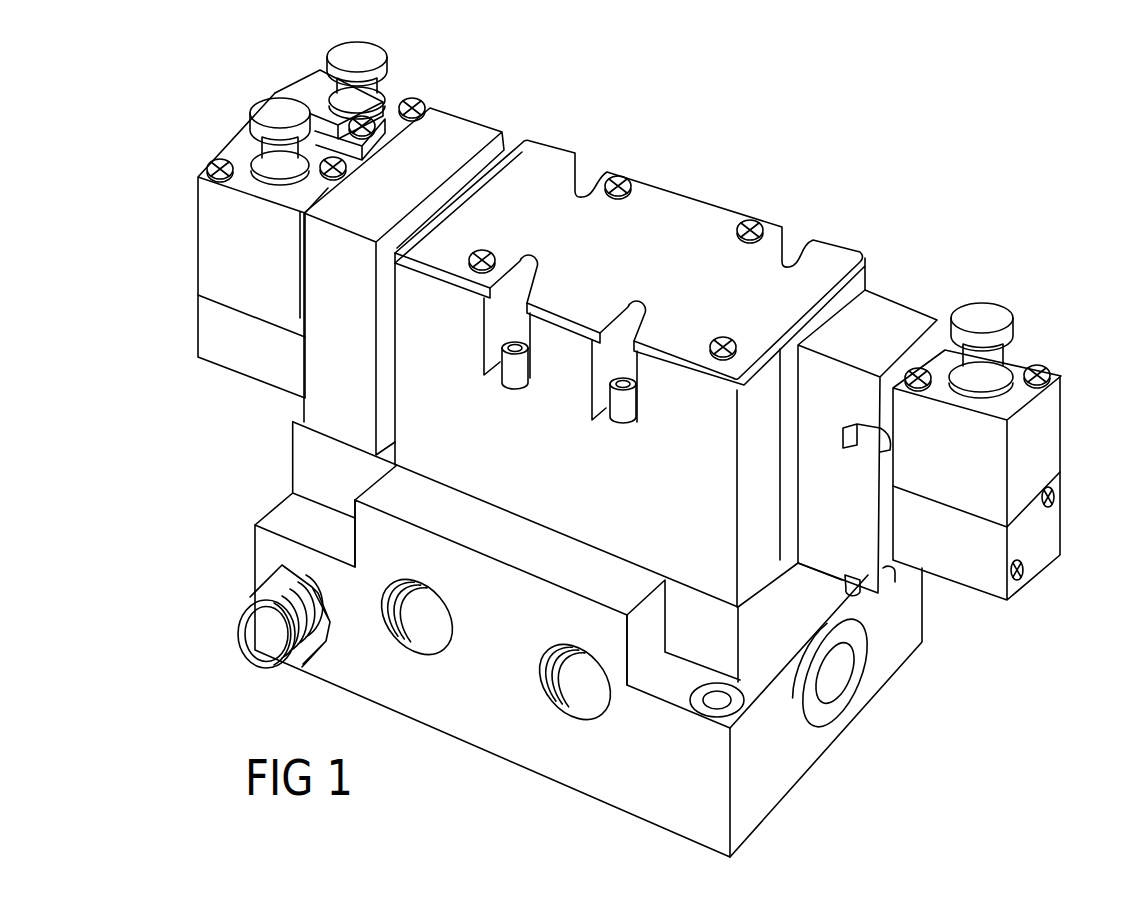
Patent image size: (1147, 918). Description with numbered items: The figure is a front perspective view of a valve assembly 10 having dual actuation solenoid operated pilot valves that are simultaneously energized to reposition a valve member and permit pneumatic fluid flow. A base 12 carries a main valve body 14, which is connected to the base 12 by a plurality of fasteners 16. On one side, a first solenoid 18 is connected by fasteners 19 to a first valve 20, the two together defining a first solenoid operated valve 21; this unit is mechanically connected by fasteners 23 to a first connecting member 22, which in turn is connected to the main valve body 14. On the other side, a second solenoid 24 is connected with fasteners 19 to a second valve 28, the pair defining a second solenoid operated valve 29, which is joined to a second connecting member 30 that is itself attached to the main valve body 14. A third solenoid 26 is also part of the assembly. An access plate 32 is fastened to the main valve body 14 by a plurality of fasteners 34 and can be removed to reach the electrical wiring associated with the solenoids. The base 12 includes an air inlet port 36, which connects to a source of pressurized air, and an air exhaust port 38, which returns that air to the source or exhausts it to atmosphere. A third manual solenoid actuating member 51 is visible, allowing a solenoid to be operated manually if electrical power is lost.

The valve assembly 10 is at (893, 197).
The base 12 is at (668, 808).
The main valve body 14 is at (561, 460).
The fasteners 16 is at (622, 398).
The first solenoid 18 is at (1012, 490).
The fasteners 19 is at (325, 166).
The first valve 20 is at (950, 562).
The first solenoid operated valve 21 is at (1006, 479).
The first connecting member 22 is at (893, 325).
The fasteners 23 is at (1052, 505).
The second solenoid 24 is at (243, 147).
The third solenoid 26 is at (320, 88).
The second valve 28 is at (237, 371).
The second solenoid operated valve 29 is at (226, 270).
The second connecting member 30 is at (455, 130).
The access plate 32 is at (690, 226).
The fasteners 34 is at (620, 182).
The air inlet port 36 is at (578, 708).
The air exhaust port 38 is at (400, 650).
The third manual solenoid actuating member 51 is at (1004, 342).